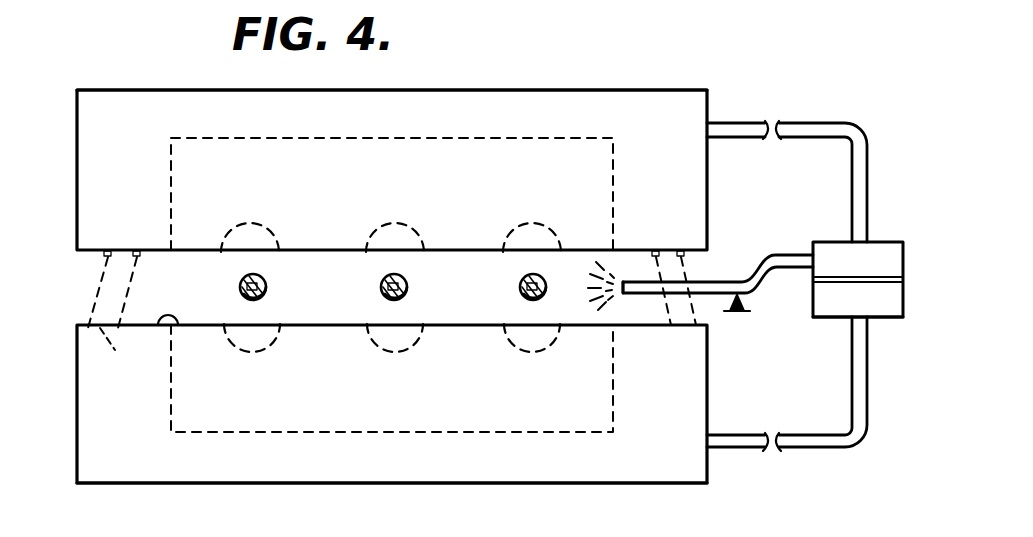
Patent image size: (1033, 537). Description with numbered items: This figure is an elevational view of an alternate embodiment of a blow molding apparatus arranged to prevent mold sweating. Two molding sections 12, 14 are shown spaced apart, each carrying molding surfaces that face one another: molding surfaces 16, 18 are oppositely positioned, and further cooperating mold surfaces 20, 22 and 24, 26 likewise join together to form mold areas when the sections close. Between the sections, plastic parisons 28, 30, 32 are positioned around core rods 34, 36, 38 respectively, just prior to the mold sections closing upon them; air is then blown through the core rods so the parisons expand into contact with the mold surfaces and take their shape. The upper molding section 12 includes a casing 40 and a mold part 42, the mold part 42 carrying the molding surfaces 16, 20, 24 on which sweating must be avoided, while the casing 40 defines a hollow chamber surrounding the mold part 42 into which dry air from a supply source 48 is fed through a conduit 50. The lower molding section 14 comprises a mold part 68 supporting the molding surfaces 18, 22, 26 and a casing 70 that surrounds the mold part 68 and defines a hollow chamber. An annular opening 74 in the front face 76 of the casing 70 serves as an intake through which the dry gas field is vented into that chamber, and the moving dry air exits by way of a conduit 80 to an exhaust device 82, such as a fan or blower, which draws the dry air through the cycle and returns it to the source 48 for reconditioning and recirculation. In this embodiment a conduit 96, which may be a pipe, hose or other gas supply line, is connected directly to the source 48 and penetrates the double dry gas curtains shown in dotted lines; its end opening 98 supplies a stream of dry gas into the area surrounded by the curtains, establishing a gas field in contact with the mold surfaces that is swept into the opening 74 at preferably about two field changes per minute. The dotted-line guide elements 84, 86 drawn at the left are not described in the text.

The molding section 12 is at (77, 182).
The molding section 14 is at (77, 422).
The molding surface 16 is at (258, 224).
The molding surface 18 is at (260, 351).
The mold surface 20 is at (402, 222).
The mold surface 22 is at (402, 351).
The mold surface 24 is at (534, 222).
The mold surface 26 is at (536, 350).
The plastic parison 28 is at (240, 287).
The plastic parison 30 is at (381, 287).
The plastic parison 32 is at (520, 287).
The core rod 34 is at (264, 292).
The core rod 36 is at (405, 292).
The core rod 38 is at (544, 292).
The casing 40 is at (618, 90).
The mold part 42 is at (513, 138).
The supply source 48 is at (828, 251).
The conduit 50 is at (770, 121).
The mold part 68 is at (615, 368).
The casing 70 is at (566, 484).
The annular opening 74 is at (112, 350).
The front face 76 is at (172, 327).
The conduit 80 is at (772, 433).
The exhaust device 82 is at (826, 312).
The guide pin 84 is at (138, 250).
The guide pin 86 is at (106, 250).
The conduit 96 is at (716, 283).
The end opening 98 is at (620, 292).